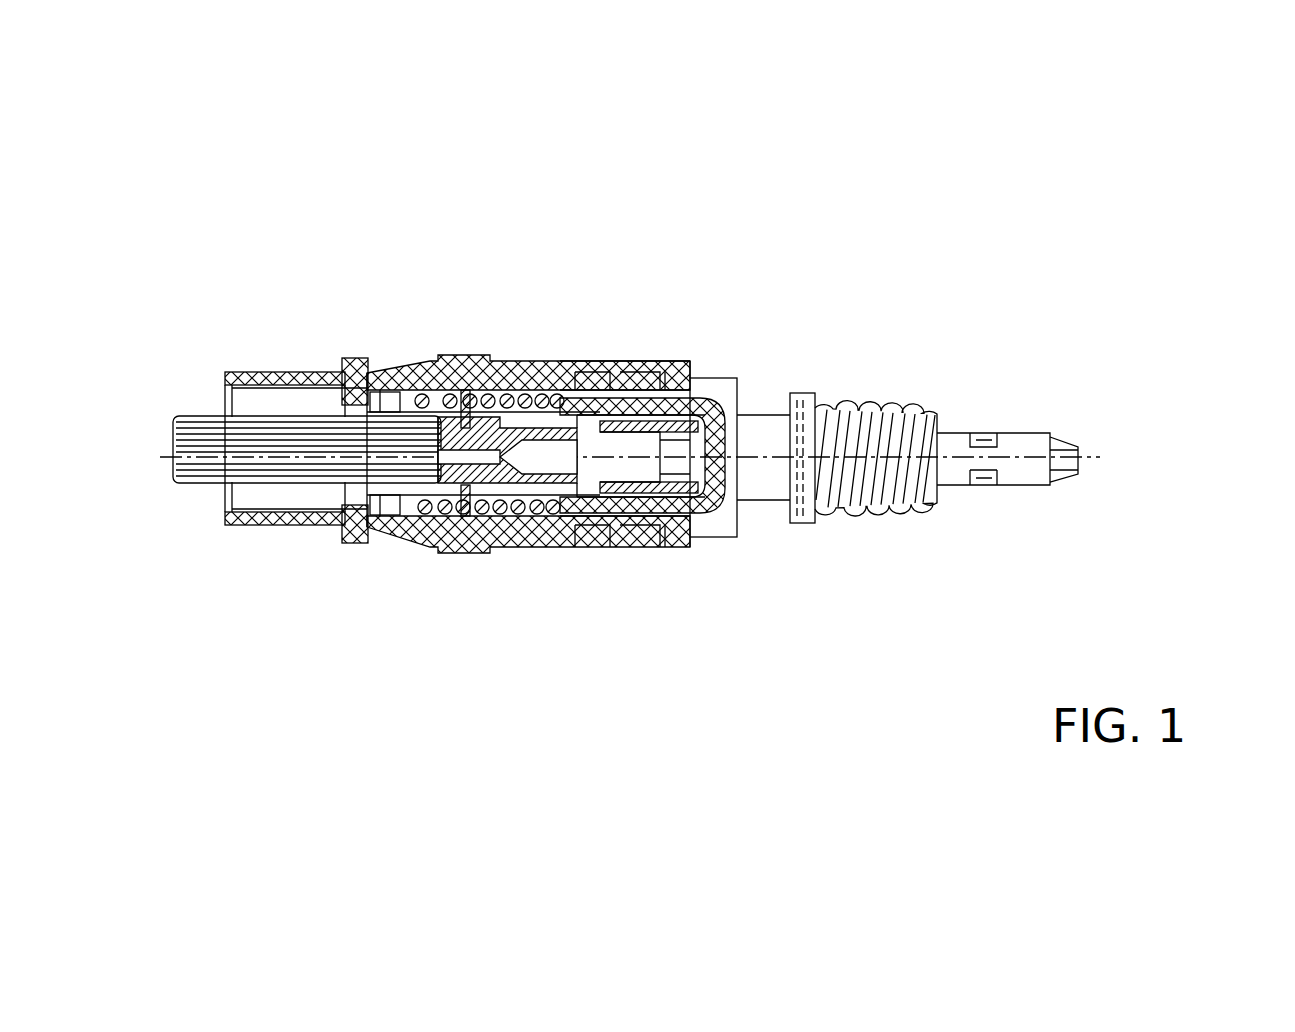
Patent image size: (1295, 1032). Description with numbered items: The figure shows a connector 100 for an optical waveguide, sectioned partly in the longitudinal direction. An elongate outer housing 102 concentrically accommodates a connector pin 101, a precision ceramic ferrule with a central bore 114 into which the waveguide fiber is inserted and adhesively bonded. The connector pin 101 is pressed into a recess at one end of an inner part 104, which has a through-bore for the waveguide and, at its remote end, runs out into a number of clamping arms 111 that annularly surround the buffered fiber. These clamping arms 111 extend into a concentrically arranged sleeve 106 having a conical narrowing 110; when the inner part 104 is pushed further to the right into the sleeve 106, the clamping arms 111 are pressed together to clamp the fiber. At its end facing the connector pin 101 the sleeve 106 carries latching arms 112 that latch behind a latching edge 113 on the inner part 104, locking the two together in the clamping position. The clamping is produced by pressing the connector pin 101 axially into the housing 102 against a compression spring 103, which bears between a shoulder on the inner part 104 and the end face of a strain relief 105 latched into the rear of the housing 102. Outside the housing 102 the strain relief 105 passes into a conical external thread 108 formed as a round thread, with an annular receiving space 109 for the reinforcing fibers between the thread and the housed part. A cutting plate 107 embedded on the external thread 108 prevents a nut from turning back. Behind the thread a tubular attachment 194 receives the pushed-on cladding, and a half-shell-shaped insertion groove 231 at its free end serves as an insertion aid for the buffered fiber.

The connector 100 is at (1147, 290).
The connector pin 101 is at (233, 591).
The outer housing 102 is at (295, 589).
The compression spring 103 is at (526, 582).
The inner part 104 is at (483, 548).
The strain relief 105 is at (635, 608).
The sleeve 106 is at (641, 564).
The cutting plate 107 is at (858, 606).
The external thread 108 is at (878, 400).
The receiving space 109 is at (767, 403).
The conical narrowing 110 is at (702, 368).
The clamping arms 111 is at (650, 362).
The latching arms 112 is at (524, 362).
The latching edge 113 is at (464, 362).
The central bore 114 is at (175, 485).
The tubular attachment 194 is at (1012, 475).
The insertion groove 231 is at (1072, 455).